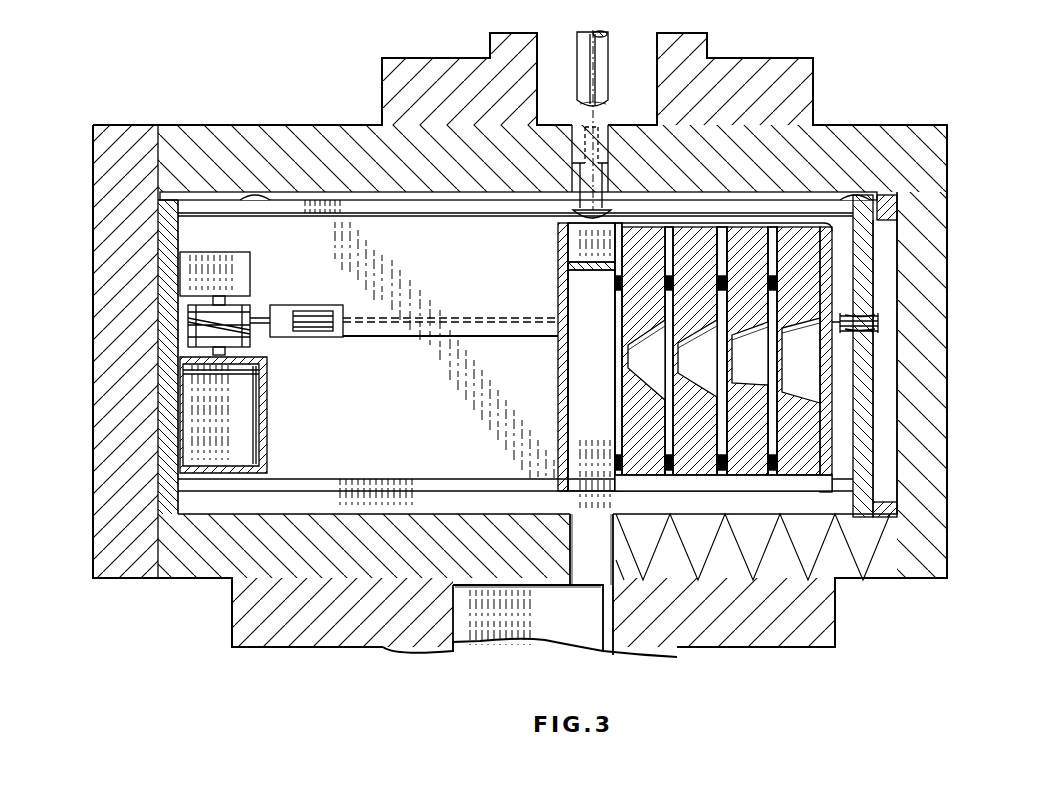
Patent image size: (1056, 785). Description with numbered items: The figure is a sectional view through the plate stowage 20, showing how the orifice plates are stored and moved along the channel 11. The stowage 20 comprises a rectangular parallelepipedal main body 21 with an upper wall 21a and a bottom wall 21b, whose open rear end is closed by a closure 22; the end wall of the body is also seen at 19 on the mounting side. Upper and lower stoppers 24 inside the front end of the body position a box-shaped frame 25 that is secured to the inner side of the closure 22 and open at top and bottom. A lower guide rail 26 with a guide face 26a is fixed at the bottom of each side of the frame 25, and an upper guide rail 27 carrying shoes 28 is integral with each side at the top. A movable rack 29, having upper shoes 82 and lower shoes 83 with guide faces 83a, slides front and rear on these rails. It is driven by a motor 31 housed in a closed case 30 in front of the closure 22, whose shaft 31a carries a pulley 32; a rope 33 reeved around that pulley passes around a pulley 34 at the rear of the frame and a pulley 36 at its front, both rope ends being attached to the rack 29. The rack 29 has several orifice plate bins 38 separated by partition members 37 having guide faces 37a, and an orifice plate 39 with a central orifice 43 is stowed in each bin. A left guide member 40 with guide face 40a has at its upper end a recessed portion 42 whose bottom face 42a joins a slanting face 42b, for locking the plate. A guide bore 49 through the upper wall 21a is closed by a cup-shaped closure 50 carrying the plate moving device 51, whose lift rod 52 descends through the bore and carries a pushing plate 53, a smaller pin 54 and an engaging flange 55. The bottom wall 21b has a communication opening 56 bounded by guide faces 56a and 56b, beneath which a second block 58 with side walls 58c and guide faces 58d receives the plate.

The channel 11 is at (990, 183).
The mounting boss 19 is at (828, 610).
The plate stowage 20 is at (549, 342).
The main body 21 is at (940, 158).
The upper wall 21a is at (320, 160).
The bottom wall 21b is at (215, 575).
The closure 22 is at (100, 140).
The stopper 24 is at (892, 210).
The frame 25 is at (890, 403).
The lower guide rail 26 is at (370, 482).
The guide face 26a is at (406, 498).
The upper guide rail 27 is at (385, 208).
The shoe 28 is at (255, 195).
The movable rack 29 is at (850, 436).
The closed case 30 is at (268, 408).
The motor 31 is at (258, 444).
The shaft 31a is at (264, 372).
The pulley 32 is at (252, 306).
The rope 33 is at (372, 332).
The pulley 34 is at (322, 306).
The pulley 36 is at (882, 318).
The partition member 37 is at (618, 290).
The guide face 37a is at (560, 351).
The orifice plate bin 38 is at (606, 381).
The orifice plate 39 is at (750, 354).
The left guide member 40 is at (559, 357).
The guide face 40a is at (585, 420).
The recessed portion 42 is at (578, 242).
The bottom face 42a is at (578, 256).
The slanting face 42b is at (575, 268).
The orifice 43 is at (835, 395).
The guide bore 49 is at (612, 172).
The cup-shaped closure 50 is at (414, 70).
The device for moving the orifice plate 51 is at (566, 126).
The lift rod 52 is at (578, 96).
The pushing plate 53 is at (572, 148).
The pin 54 is at (590, 180).
The engaging flange 55 is at (585, 215).
The communication opening 56 is at (597, 584).
The guide face 56a is at (588, 536).
The guide face 56b is at (580, 548).
The second block 58 is at (571, 648).
The side wall 58c is at (558, 635).
The guide face 58d is at (595, 617).
The upper shoe 82 is at (742, 222).
The lower shoe 83 is at (728, 486).
The guide face 83a is at (808, 488).